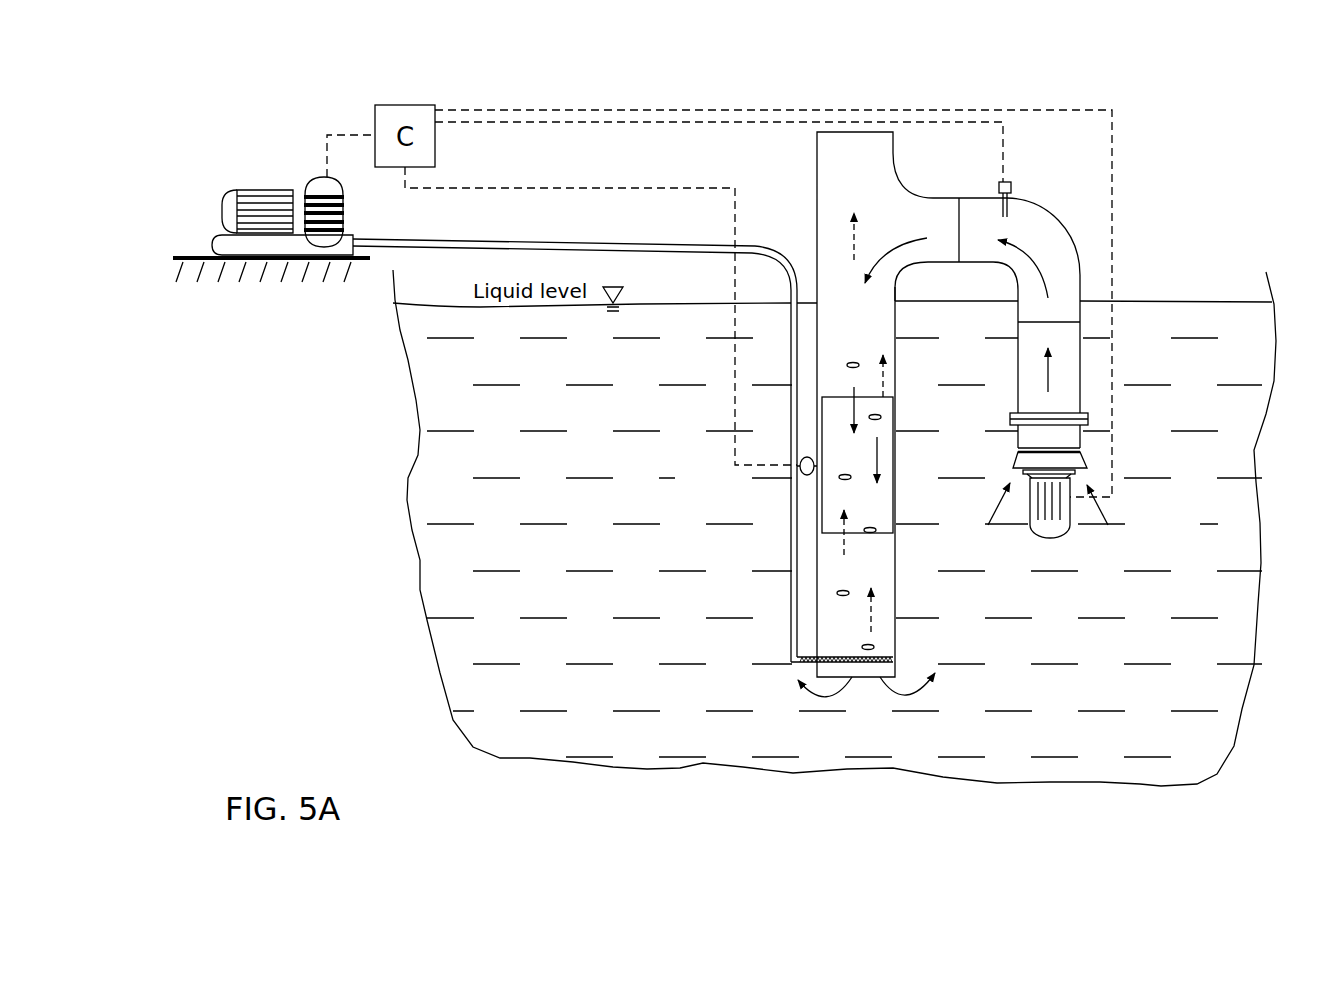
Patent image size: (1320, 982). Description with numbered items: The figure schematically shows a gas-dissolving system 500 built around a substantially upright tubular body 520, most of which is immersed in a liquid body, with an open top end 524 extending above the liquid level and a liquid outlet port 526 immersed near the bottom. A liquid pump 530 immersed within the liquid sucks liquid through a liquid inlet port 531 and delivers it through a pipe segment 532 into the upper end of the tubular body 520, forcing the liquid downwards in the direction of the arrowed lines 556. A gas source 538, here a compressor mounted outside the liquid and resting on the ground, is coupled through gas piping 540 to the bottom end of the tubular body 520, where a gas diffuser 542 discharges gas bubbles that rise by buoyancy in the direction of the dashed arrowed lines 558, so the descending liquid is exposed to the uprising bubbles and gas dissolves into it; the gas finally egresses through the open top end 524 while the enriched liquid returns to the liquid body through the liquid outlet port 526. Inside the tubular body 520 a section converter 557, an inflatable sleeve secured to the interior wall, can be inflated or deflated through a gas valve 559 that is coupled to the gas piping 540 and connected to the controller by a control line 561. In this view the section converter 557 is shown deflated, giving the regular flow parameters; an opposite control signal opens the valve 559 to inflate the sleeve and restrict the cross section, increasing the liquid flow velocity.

The system 500 is at (250, 100).
The gas source 538 is at (224, 194).
The gas piping 540 is at (792, 582).
The control line 561 is at (735, 373).
The gas valve 559 is at (800, 467).
The open top end 524 is at (863, 133).
The pipe segment 532 is at (1047, 243).
The liquid inlet port 531 is at (1080, 474).
The liquid pump 530 is at (1057, 513).
The tubular body 520 is at (896, 551).
The section converter 557 is at (893, 427).
The arrowed lines 556 is at (877, 457).
The dashed arrowed lines 558 is at (872, 615).
The gas diffuser 542 is at (795, 663).
The liquid outlet port 526 is at (866, 678).